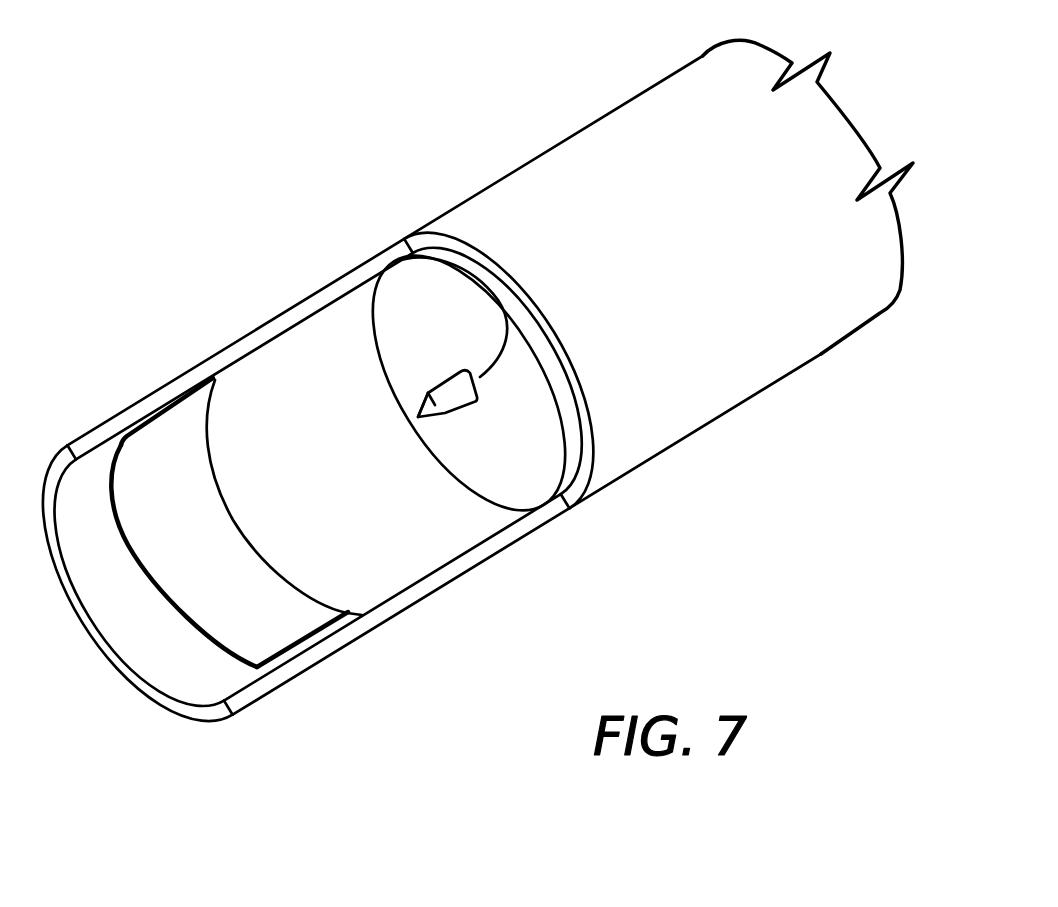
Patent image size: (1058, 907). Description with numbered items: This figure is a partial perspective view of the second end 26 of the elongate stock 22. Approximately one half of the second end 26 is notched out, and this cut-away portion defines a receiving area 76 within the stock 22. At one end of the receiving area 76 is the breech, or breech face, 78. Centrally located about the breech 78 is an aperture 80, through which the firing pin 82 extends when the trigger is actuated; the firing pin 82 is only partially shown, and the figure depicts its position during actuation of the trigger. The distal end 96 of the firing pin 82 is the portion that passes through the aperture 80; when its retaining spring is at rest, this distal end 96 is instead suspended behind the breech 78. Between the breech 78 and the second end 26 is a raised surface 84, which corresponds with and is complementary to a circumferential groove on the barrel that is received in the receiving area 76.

The stock 22 is at (683, 256).
The second end 26 is at (237, 714).
The receiving area 76 is at (331, 473).
The breech 78 is at (438, 307).
The aperture 80 is at (506, 332).
The firing pin 82 is at (455, 398).
The raised surface 84 is at (172, 447).
The distal end 96 is at (425, 403).